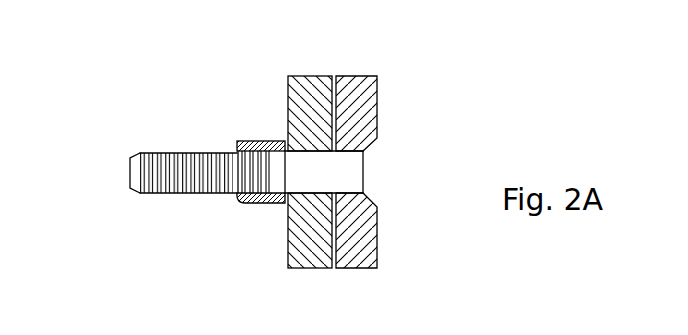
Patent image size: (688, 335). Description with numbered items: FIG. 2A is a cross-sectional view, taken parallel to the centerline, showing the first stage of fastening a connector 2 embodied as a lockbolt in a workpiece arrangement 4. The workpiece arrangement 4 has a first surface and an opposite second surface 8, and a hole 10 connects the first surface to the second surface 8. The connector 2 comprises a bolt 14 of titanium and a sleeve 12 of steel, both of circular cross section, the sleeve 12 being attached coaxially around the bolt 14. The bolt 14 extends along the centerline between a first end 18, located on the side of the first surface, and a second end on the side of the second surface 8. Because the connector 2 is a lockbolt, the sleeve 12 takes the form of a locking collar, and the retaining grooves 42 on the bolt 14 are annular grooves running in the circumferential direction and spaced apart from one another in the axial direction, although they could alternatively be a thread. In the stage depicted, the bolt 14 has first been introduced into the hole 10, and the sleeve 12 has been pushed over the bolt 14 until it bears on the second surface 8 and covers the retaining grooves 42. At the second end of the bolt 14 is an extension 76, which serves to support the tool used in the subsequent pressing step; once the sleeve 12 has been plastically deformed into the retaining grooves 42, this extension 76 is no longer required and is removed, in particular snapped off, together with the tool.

The connector 2 is at (200, 158).
The workpiece arrangement 4 is at (307, 92).
The second surface 8 is at (288, 237).
The hole 10 is at (347, 137).
The bolt 14 is at (353, 222).
The sleeve 12 is at (263, 140).
The first end 18 is at (133, 168).
The retaining grooves 42 is at (250, 205).
The extension 76 is at (165, 195).